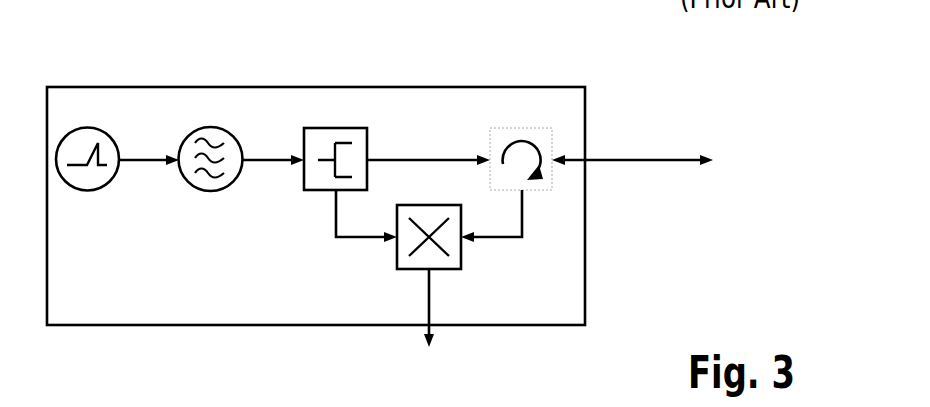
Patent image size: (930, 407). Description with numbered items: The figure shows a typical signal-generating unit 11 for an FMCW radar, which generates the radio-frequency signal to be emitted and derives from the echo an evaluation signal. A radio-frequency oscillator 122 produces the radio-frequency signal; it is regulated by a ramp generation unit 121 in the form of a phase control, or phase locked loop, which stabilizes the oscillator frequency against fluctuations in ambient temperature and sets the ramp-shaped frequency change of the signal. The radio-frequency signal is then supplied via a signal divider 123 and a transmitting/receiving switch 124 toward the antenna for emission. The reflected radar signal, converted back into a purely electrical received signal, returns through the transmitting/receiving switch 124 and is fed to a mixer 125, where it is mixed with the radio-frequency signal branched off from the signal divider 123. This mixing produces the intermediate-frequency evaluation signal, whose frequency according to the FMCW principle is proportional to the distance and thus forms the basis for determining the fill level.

The signal-generating unit 11 is at (204, 87).
The ramp generation unit 121 is at (92, 186).
The radio-frequency oscillator 122 is at (208, 191).
The signal divider 123 is at (325, 191).
The transmitting/receiving switch 124 is at (517, 128).
The mixer 125 is at (397, 257).